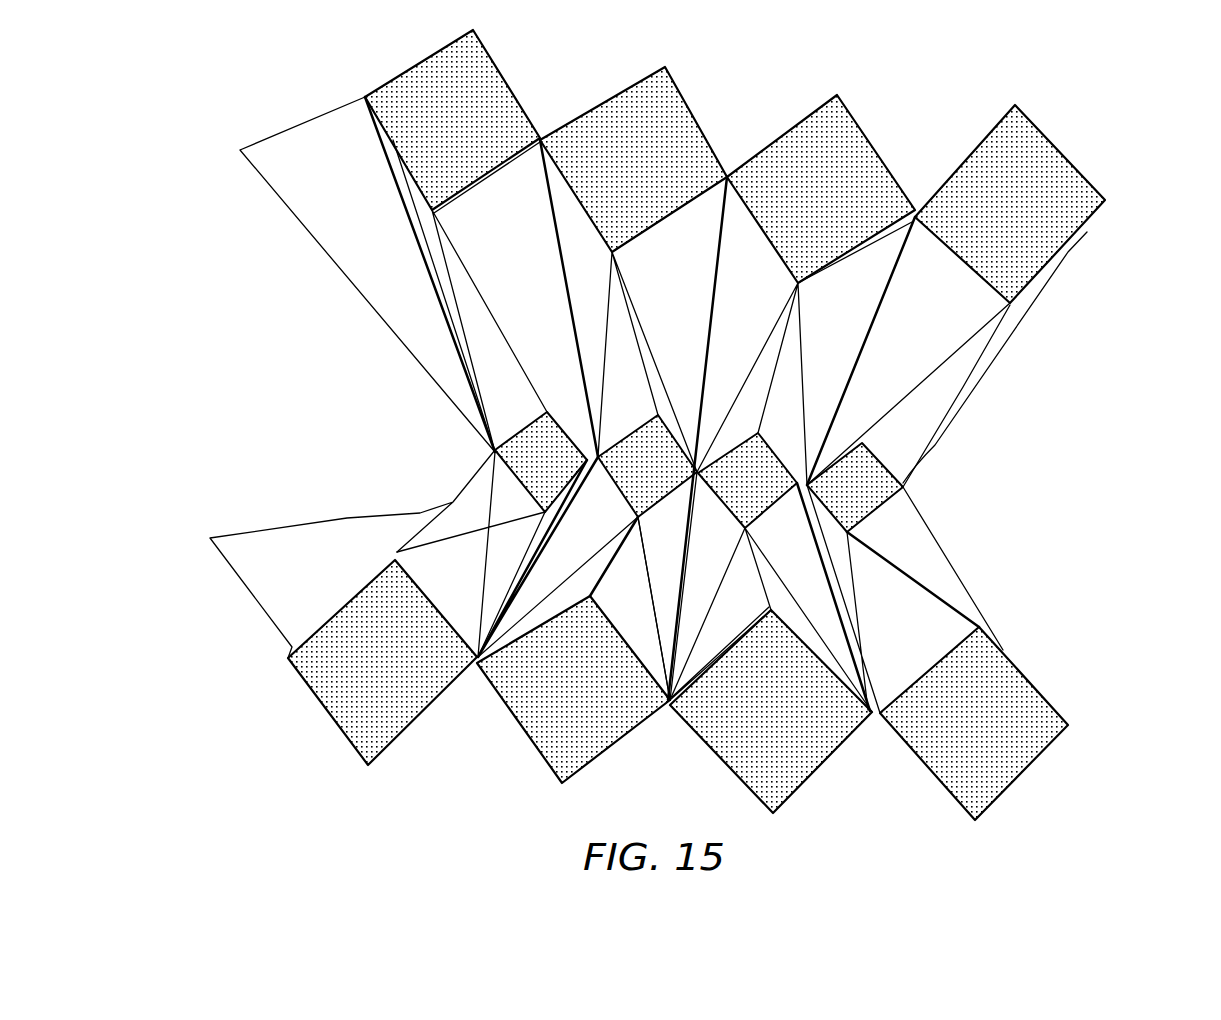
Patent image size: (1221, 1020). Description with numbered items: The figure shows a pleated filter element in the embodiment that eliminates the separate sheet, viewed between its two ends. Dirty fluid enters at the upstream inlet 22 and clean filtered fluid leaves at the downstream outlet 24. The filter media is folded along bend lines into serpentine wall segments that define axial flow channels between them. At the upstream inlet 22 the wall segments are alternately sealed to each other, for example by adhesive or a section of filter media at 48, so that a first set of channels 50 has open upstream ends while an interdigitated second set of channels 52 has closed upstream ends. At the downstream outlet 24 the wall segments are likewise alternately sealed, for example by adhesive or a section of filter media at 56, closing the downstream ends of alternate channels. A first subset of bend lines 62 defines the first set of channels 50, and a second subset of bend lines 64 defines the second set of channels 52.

The upstream inlet 22 is at (699, 425).
The downstream outlet 24 is at (970, 496).
The section of filter media 48 is at (810, 747).
The first set of channels 50 is at (652, 637).
The second set of channels 52 is at (545, 705).
The section of filter media 56 is at (856, 467).
The first subset of bend lines 62 is at (677, 665).
The second subset of bend lines 64 is at (603, 568).